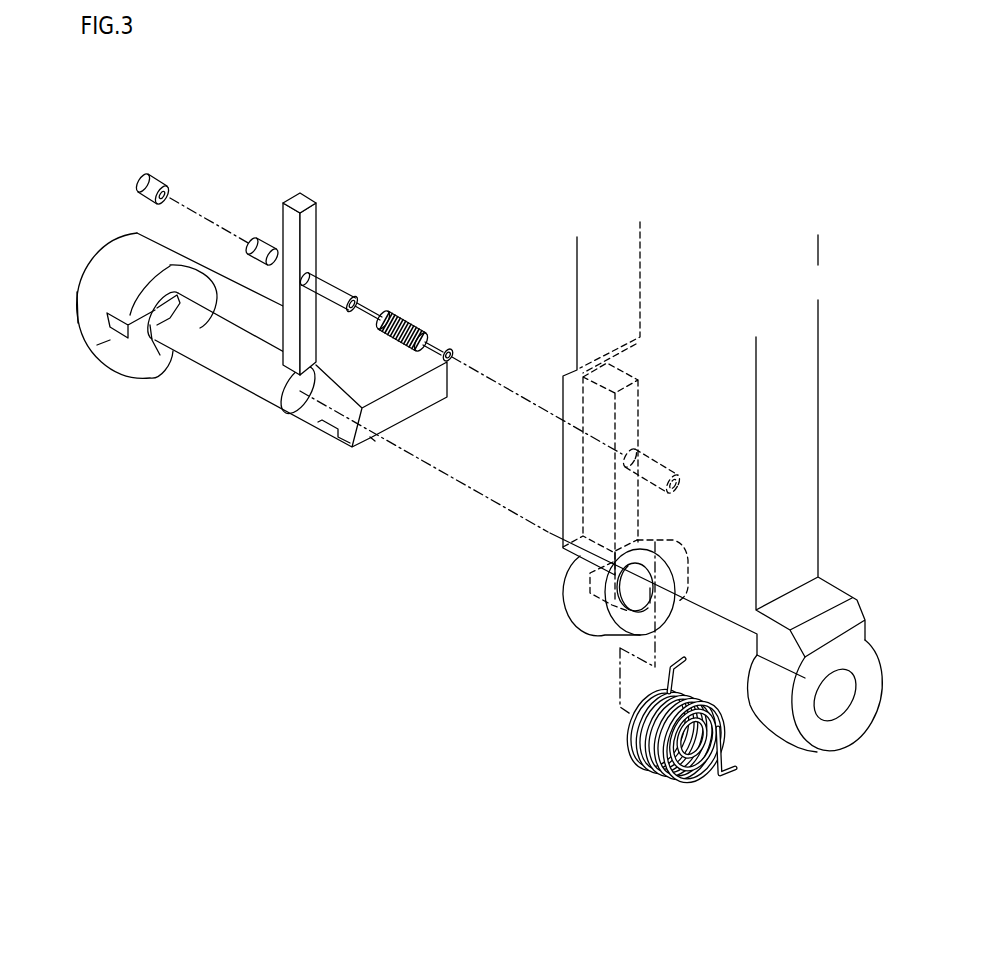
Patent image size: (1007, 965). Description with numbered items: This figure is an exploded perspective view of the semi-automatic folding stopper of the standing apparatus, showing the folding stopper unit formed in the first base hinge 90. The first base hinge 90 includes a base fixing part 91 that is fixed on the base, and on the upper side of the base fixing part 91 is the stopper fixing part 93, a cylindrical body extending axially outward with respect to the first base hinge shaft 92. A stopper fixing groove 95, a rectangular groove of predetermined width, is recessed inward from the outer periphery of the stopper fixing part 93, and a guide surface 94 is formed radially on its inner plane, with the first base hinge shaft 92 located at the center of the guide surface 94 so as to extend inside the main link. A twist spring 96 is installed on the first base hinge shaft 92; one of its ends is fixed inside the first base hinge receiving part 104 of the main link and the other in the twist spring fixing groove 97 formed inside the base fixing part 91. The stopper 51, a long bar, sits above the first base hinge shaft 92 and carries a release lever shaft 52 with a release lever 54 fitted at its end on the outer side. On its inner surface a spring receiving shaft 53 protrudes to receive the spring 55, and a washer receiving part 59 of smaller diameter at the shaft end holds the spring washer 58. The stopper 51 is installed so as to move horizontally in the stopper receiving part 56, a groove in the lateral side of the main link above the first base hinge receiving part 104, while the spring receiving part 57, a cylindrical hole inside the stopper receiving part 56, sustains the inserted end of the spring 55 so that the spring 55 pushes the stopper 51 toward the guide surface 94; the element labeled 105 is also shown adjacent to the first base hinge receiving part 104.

The stopper 51 is at (306, 190).
The release lever shaft 52 is at (276, 250).
The spring receiving shaft 53 is at (330, 290).
The release lever 54 is at (160, 178).
The spring 55 is at (400, 322).
The stopper receiving part 56 is at (598, 398).
The spring receiving part 57 is at (653, 460).
The spring washer 58 is at (452, 353).
The washer receiving part 59 is at (353, 300).
The first base hinge 90 is at (158, 415).
The base fixing part 91 is at (315, 402).
The first base hinge shaft 92 is at (238, 372).
The stopper fixing part 93 is at (100, 350).
The guide surface 94 is at (170, 282).
The stopper fixing groove 95 is at (77, 303).
The twist spring 96 is at (648, 762).
The twist spring fixing groove 97 is at (337, 440).
The first base hinge receiving part 104 is at (590, 617).
The hook 105 is at (667, 590).